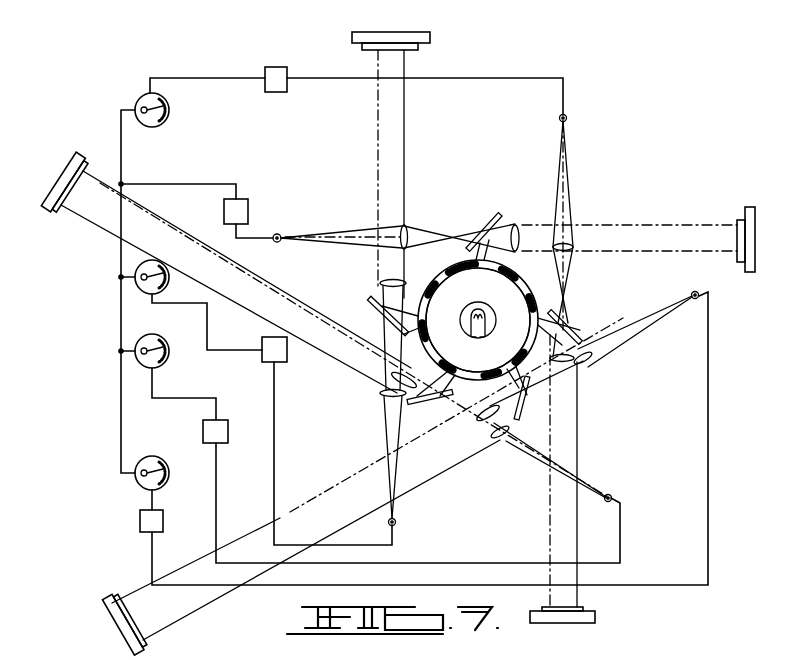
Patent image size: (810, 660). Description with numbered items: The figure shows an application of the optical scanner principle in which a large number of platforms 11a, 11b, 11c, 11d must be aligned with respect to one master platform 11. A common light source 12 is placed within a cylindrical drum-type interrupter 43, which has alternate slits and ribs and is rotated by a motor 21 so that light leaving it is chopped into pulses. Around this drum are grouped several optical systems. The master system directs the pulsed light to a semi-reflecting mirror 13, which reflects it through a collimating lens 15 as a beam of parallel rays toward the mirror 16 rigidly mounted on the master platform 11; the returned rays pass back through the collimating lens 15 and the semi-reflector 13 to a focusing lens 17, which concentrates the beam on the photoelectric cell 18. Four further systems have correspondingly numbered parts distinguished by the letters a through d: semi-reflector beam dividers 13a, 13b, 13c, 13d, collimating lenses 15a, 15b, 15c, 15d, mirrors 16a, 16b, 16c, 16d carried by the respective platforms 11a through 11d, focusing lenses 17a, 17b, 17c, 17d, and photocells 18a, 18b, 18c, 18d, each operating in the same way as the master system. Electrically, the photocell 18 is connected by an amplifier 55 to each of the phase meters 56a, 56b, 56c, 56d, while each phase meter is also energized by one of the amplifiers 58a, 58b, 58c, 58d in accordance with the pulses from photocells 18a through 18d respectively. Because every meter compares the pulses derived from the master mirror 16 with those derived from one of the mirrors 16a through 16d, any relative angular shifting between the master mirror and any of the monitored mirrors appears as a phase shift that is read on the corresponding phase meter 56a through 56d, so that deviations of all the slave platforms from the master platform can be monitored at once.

The master platform 11 is at (755, 232).
The platform 11a is at (595, 622).
The platform 11b is at (431, 40).
The platform 11c is at (78, 165).
The platform 11d is at (110, 603).
The light source 12 is at (478, 303).
The semi-reflecting mirror 13 is at (495, 216).
The semi-reflector beam divider 13a is at (582, 335).
The semi-reflector beam divider 13b is at (365, 303).
The semi-reflector beam divider 13c is at (408, 405).
The semi-reflector beam divider 13d is at (530, 405).
The collimating lens 15 is at (516, 224).
The collimating lens 15a is at (575, 360).
The collimating lens 15b is at (380, 283).
The collimating lens 15c is at (383, 389).
The collimating lens 15d is at (490, 427).
The mirror 16 is at (737, 225).
The mirror 16a is at (585, 608).
The mirror 16b is at (418, 48).
The mirror 16c is at (55, 215).
The mirror 16d is at (150, 628).
The focusing lens 17 is at (403, 228).
The focusing lens 17a is at (573, 247).
The focusing lens 17b is at (395, 382).
The focusing lens 17c is at (503, 445).
The focusing lens 17d is at (592, 362).
The photoelectric cell 18 is at (281, 235).
The photocell 18a is at (567, 118).
The photocell 18b is at (397, 520).
The photocell 18c is at (612, 497).
The photocell 18d is at (700, 295).
The motor 21 is at (464, 328).
The cylindrical drum-type interrupter 43 is at (515, 350).
The amplifier 55 is at (250, 210).
The phase meter 56a is at (170, 110).
The phase meter 56b is at (167, 290).
The phase meter 56c is at (168, 365).
The phase meter 56d is at (168, 480).
The amplifier 58a is at (285, 90).
The amplifier 58b is at (287, 358).
The amplifier 58c is at (228, 440).
The amplifier 58d is at (163, 525).